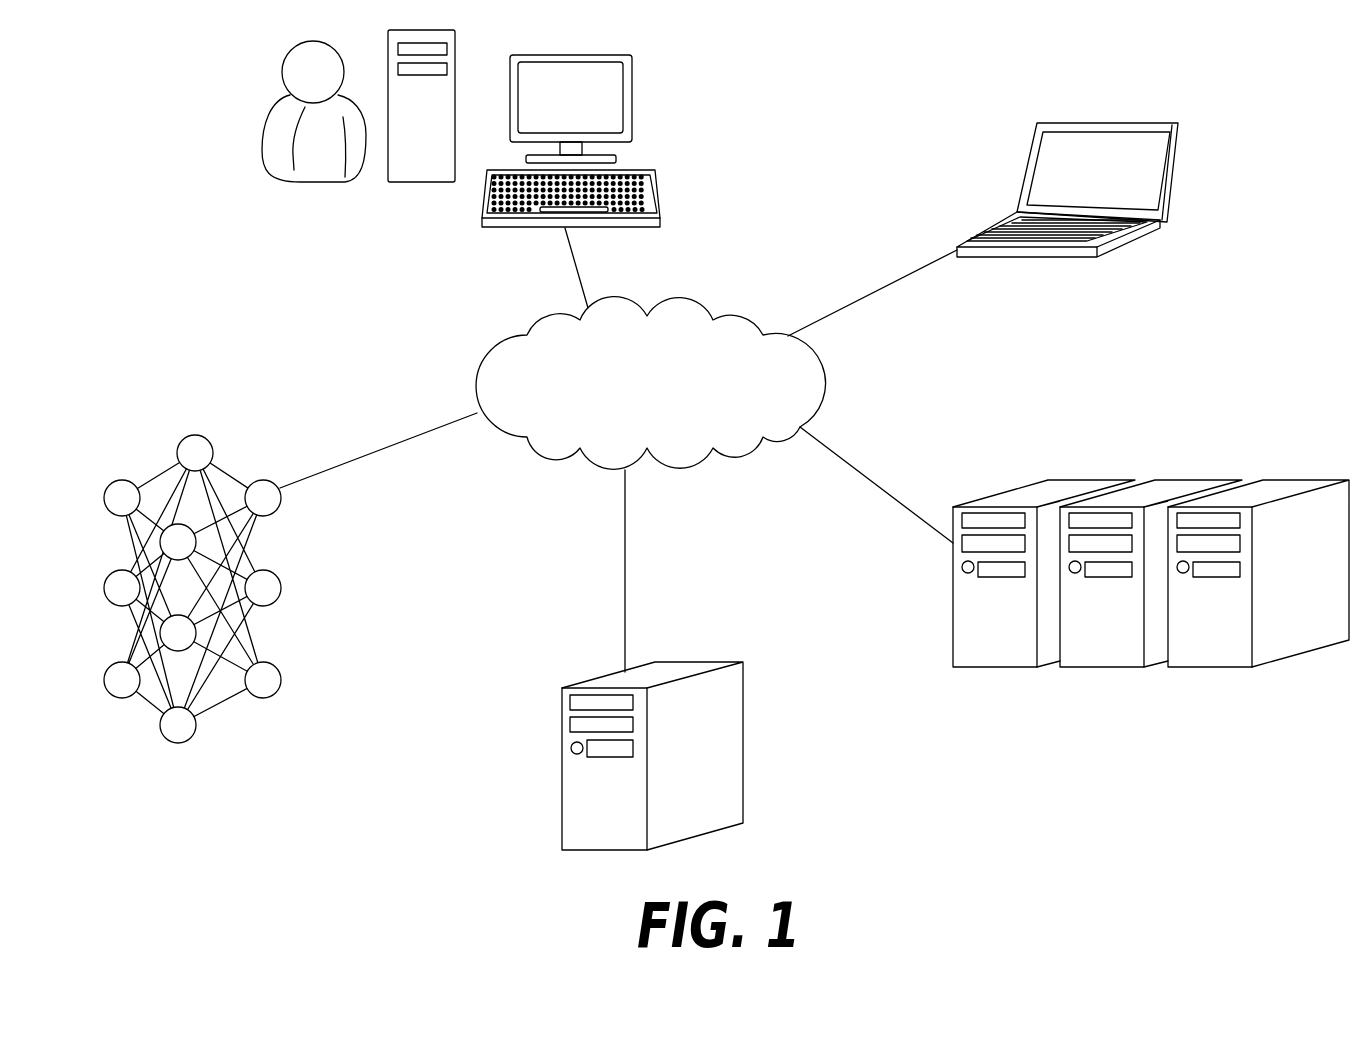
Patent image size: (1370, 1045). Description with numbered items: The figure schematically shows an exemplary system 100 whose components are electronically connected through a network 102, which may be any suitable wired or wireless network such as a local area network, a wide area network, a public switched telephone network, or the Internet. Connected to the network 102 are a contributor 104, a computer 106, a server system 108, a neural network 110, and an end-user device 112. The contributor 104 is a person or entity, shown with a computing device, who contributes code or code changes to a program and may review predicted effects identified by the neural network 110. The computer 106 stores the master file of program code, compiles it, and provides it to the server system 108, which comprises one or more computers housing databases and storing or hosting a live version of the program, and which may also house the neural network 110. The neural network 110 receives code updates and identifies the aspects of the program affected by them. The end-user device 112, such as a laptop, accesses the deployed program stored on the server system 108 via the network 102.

The system 100 is at (158, 156).
The network 102 is at (687, 297).
The contributor 104 is at (634, 92).
The computer 106 is at (745, 728).
The server system 108 is at (1093, 480).
The neural network 110 is at (282, 588).
The end-user device 112 is at (1172, 190).